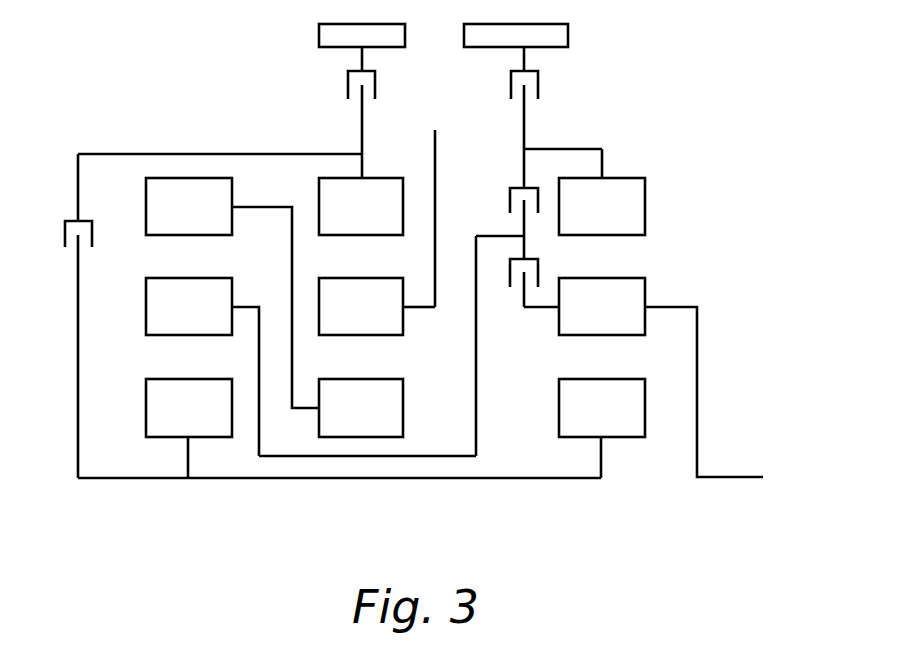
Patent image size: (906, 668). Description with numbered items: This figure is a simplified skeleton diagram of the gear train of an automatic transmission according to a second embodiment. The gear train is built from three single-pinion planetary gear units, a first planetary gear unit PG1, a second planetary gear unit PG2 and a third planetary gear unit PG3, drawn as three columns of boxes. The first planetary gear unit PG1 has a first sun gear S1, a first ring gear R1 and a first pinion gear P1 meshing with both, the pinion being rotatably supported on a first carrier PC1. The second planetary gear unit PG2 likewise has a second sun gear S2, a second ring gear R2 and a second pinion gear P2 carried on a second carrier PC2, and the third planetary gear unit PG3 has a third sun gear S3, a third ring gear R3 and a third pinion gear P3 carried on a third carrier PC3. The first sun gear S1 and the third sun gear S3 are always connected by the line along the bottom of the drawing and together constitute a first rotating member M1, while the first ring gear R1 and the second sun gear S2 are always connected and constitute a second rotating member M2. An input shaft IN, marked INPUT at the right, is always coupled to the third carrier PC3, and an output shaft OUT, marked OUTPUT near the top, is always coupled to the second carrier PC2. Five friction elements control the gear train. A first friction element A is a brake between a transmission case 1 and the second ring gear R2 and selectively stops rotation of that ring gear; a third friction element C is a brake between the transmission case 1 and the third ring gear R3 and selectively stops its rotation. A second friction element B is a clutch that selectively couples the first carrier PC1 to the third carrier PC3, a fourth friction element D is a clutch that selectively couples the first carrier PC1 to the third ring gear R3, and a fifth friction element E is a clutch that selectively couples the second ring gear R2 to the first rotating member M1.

The transmission case 1 is at (319, 39).
The first friction element A is at (350, 112).
The second friction element B is at (522, 279).
The third friction element C is at (536, 117).
The fourth friction element D is at (512, 219).
The fifth friction element E is at (66, 247).
The first ring gear R1 is at (189, 206).
The second ring gear R2 is at (361, 206).
The third ring gear R3 is at (602, 206).
The first pinion gear P1 is at (189, 306).
The second pinion gear P2 is at (361, 306).
The third pinion gear P3 is at (602, 306).
The first sun gear S1 is at (189, 408).
The second sun gear S2 is at (361, 408).
The third sun gear S3 is at (602, 408).
The first carrier PC1 is at (250, 306).
The second carrier PC2 is at (425, 309).
The third carrier PC3 is at (668, 306).
The first planetary gear unit PG1 is at (207, 459).
The second planetary gear unit PG2 is at (398, 459).
The third planetary gear unit PG3 is at (627, 459).
The first rotating member M1 is at (305, 479).
The second rotating member M2 is at (268, 207).
The output shaft OUT is at (406, 218).
The output OUTPUT is at (434, 131).
The input shaft IN is at (728, 479).
The input INPUT is at (730, 459).